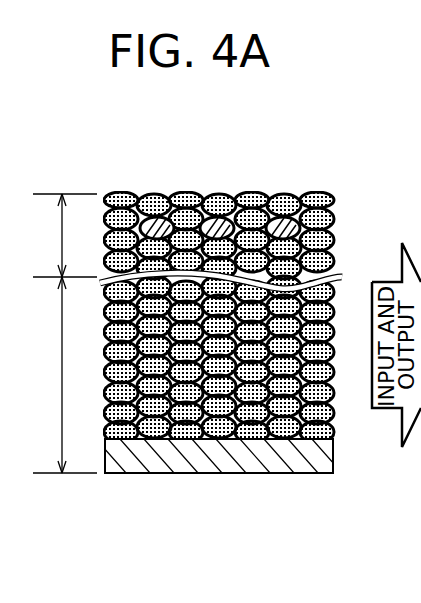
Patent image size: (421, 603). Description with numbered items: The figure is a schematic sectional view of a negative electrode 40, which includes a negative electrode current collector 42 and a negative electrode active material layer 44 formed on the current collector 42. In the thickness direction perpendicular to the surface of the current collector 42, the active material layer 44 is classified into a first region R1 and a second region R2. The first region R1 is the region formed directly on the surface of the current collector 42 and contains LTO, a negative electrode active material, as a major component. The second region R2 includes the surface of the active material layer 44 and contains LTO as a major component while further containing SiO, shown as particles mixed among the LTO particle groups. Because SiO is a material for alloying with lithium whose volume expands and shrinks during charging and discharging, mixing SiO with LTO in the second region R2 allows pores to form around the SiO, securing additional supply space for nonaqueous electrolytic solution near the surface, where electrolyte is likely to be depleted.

The negative electrode 40 is at (173, 194).
The negative electrode current collector 42 is at (305, 463).
The negative electrode active material layer 44 is at (321, 193).
The silicon oxide SiO is at (282, 196).
The element LTO is at (183, 441).
The first region R1 is at (61, 375).
The second region R2 is at (61, 235).